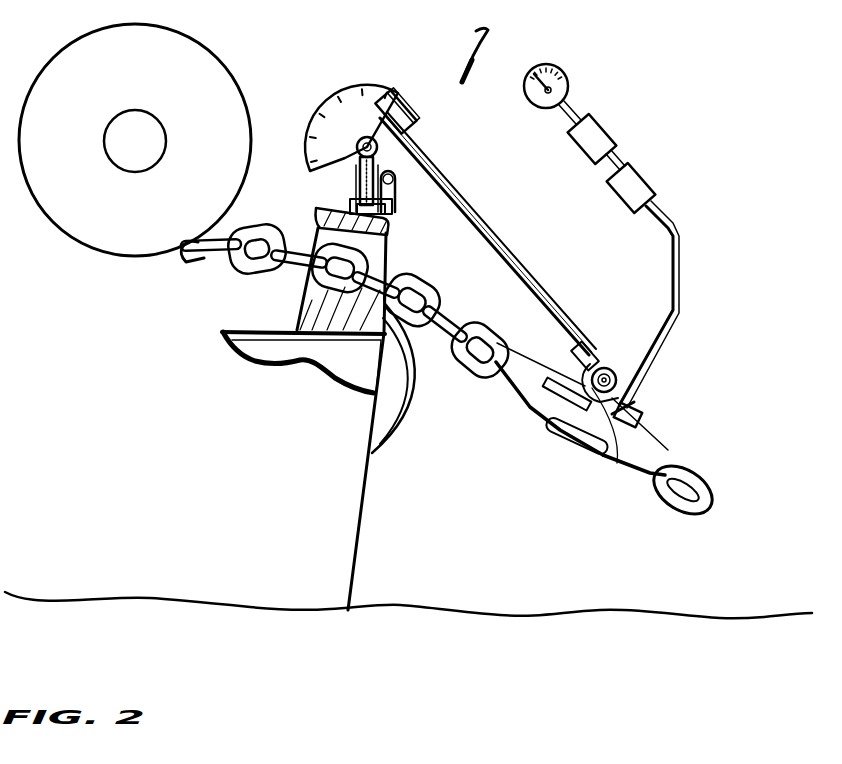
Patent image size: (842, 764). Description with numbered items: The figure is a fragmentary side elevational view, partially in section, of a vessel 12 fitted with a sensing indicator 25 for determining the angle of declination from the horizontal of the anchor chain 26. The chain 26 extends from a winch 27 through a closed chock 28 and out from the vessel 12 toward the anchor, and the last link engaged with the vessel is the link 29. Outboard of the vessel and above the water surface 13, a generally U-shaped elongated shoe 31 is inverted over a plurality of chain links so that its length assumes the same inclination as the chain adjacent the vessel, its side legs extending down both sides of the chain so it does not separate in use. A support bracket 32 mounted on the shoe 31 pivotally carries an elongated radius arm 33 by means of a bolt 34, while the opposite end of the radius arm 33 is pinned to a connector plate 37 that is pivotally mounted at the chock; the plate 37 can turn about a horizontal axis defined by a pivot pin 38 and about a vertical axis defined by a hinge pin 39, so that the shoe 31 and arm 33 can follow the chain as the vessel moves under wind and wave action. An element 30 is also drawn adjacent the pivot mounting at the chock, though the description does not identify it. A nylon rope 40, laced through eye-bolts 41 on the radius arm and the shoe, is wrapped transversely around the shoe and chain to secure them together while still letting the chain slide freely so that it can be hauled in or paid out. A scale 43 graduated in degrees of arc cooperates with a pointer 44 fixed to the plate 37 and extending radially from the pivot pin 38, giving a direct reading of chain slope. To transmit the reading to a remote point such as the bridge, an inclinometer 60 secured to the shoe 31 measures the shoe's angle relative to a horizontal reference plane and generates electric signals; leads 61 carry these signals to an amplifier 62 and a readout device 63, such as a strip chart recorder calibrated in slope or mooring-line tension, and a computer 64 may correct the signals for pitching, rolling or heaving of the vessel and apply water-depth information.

The vessel 12 is at (330, 490).
The water surface 13 is at (533, 603).
The sensing indicator 25 is at (473, 45).
The anchor chain 26 is at (700, 488).
The winch 27 is at (107, 237).
The closed chock 28 is at (377, 243).
The link 29 is at (425, 286).
The latch 30 is at (395, 190).
The elongated shoe 31 is at (655, 450).
The support bracket 32 is at (617, 463).
The radius arm 33 is at (492, 232).
The bolt 34 is at (618, 375).
The connector plate 37 is at (402, 128).
The pivot pin 38 is at (357, 140).
The hinge pin 39 is at (362, 177).
The nylon rope 40 is at (557, 440).
The eye-bolts 41 is at (565, 420).
The scale 43 is at (322, 104).
The pointer 44 is at (350, 87).
The inclinometer 60 is at (642, 413).
The leads 61 is at (672, 285).
The amplifier 62 is at (655, 183).
The readout device 63 is at (560, 68).
The computer 64 is at (618, 143).